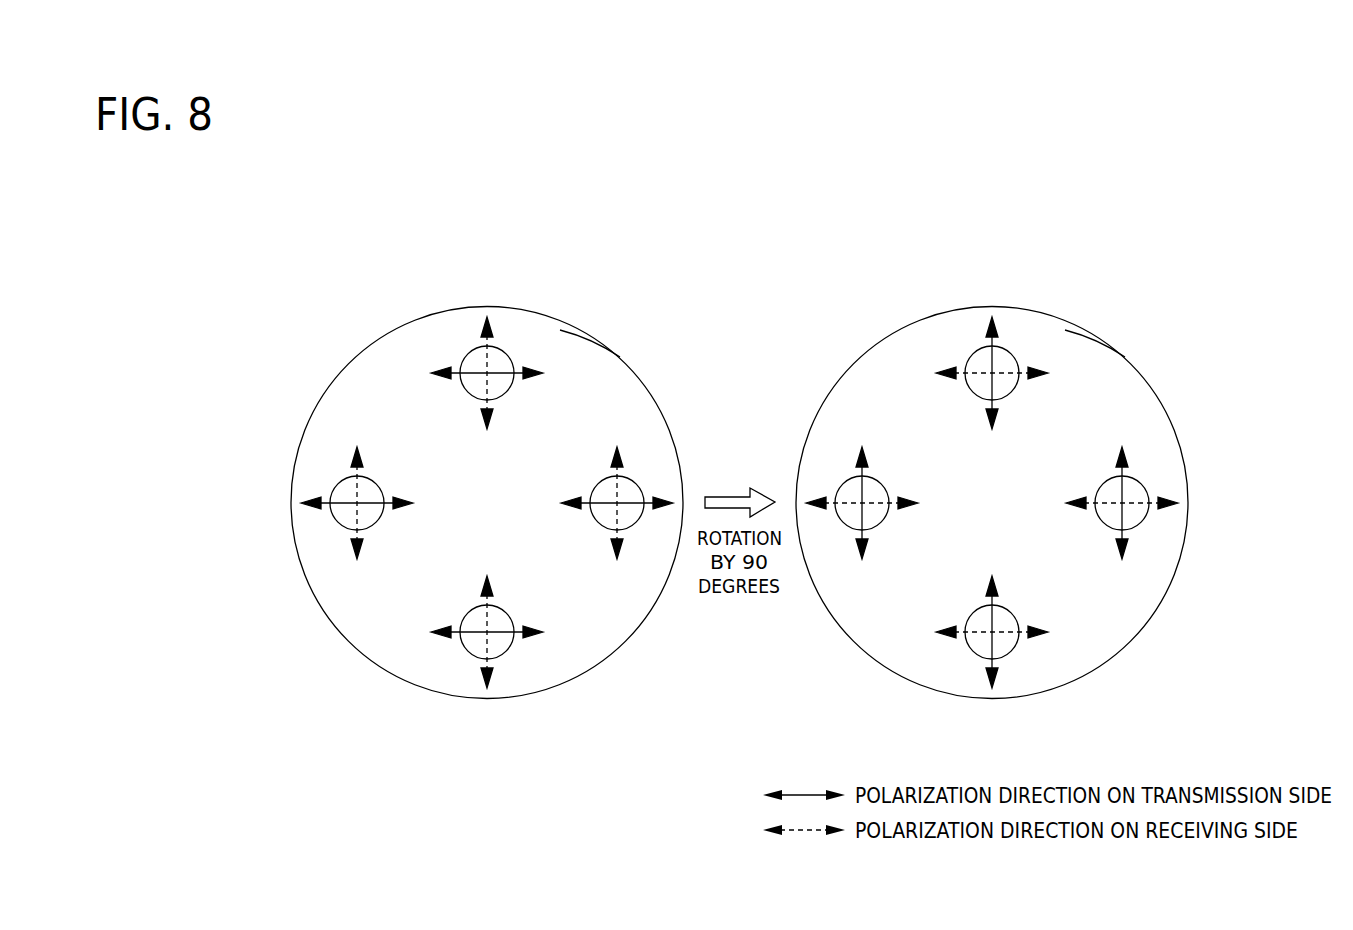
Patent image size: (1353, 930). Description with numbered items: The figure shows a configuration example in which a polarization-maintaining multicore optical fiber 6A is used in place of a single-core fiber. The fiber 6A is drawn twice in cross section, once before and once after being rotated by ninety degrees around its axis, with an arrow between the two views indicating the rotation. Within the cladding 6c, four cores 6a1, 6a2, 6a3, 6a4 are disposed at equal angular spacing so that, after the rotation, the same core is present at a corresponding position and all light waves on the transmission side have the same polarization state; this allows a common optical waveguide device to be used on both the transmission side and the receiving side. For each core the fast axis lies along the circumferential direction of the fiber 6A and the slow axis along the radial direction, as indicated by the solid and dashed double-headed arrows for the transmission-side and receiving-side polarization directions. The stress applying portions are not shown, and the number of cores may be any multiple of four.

The polarization-maintaining multicore optical fiber 6A is at (350, 307).
The cladding 6c is at (587, 367).
The core 6a1 is at (466, 394).
The core 6a2 is at (598, 525).
The core 6a3 is at (470, 606).
The core 6a4 is at (381, 481).